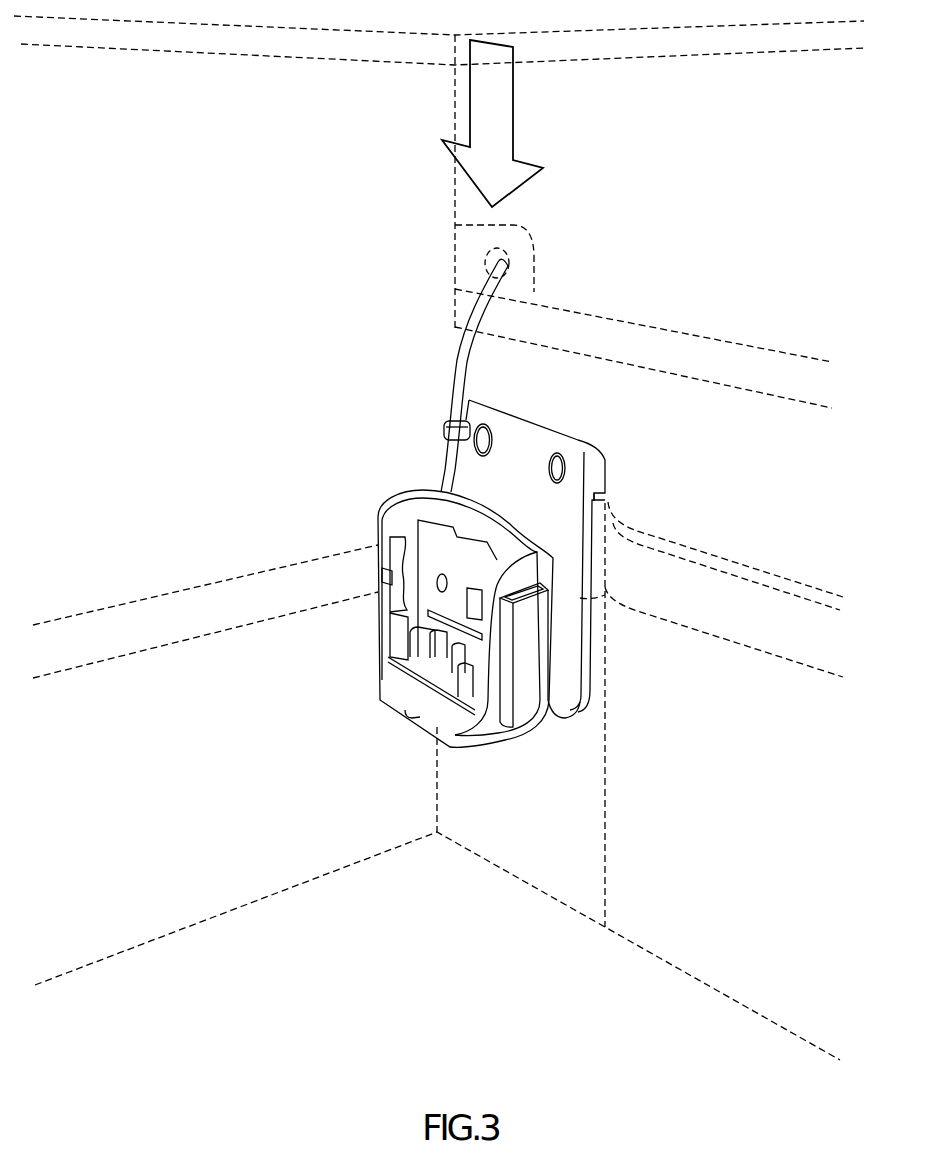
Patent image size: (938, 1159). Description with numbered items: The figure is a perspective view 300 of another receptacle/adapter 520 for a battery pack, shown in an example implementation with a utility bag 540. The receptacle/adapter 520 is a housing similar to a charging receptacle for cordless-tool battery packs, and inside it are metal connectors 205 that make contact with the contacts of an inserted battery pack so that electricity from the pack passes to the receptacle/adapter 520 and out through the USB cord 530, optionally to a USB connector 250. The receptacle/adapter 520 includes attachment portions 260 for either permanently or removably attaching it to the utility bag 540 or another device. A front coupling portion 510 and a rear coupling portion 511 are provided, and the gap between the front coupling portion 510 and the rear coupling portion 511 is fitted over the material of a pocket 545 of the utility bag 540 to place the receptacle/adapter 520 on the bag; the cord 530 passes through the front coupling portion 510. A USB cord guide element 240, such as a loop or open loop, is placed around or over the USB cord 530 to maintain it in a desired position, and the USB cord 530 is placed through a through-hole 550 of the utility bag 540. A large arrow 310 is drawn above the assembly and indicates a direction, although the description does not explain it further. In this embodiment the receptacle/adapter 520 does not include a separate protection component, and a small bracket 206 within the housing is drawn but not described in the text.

The perspective view 300 is at (715, 240).
The direction of insertion 310 is at (513, 106).
The through-hole 550 is at (497, 262).
The USB cord 530 is at (460, 371).
The USB cord guide element 240 is at (445, 428).
The front coupling portion 510 is at (560, 693).
The attachment portions 260 is at (560, 468).
The rear coupling portion 511 is at (603, 497).
The pocket 545 is at (597, 540).
The utility bag 540 is at (547, 805).
The receptacle/adapter 520 is at (382, 542).
The bracket 206 is at (397, 602).
The metal connectors 205 is at (443, 650).
The USB connector 250 is at (523, 623).